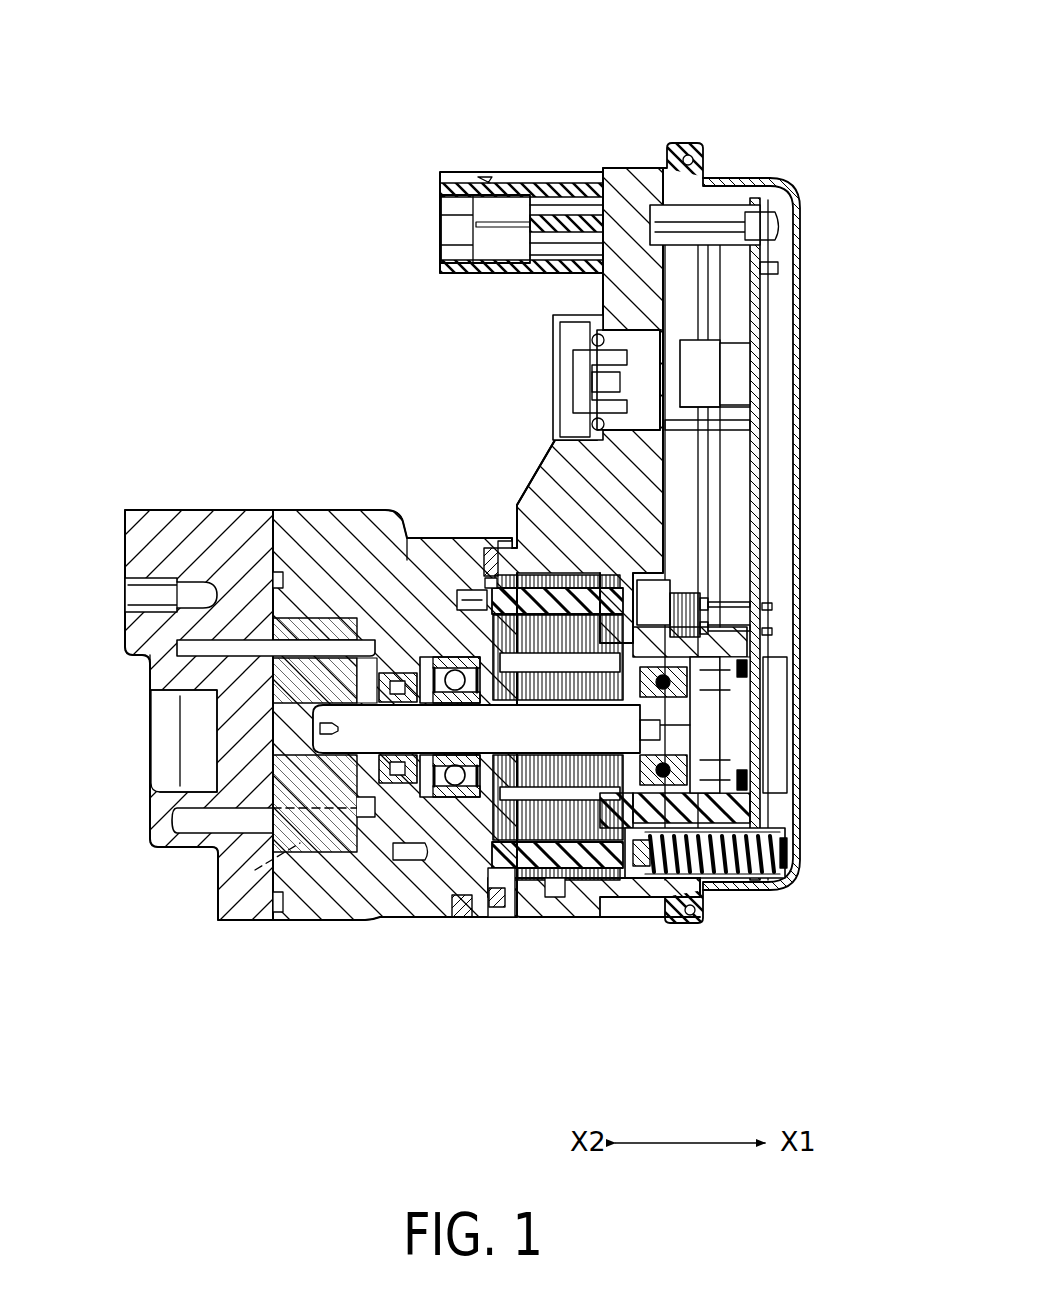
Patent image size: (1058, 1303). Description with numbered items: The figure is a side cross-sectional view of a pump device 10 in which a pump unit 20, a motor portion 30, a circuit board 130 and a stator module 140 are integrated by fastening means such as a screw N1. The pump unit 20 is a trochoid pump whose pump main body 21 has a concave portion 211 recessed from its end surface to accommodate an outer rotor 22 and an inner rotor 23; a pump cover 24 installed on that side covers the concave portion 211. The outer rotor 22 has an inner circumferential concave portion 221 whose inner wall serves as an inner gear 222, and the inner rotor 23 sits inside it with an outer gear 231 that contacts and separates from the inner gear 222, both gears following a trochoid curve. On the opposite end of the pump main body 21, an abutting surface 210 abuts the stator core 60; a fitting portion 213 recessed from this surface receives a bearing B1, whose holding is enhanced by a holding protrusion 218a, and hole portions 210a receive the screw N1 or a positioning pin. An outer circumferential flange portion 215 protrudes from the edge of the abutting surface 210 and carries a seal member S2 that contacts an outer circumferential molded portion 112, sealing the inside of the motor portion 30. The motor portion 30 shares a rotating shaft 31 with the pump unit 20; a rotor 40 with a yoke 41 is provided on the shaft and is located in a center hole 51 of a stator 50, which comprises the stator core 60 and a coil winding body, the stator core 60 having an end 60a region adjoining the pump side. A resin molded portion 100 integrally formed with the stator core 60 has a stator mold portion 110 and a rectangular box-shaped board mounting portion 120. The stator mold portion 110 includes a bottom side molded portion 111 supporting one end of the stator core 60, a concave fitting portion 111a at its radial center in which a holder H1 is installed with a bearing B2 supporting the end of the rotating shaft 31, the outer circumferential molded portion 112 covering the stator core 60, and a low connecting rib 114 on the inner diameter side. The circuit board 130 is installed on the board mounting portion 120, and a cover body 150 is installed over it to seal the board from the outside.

The pump device 10 is at (585, 112).
The pump unit 20 is at (230, 930).
The pump main body 21 is at (355, 520).
The outer rotor 22 is at (300, 618).
The inner rotor 23 is at (275, 657).
The pump cover 24 is at (175, 820).
The motor portion 30 is at (590, 900).
The rotating shaft 31 is at (333, 745).
The rotor 40 is at (613, 905).
The yoke 41 is at (537, 887).
The stator 50 is at (607, 628).
The center hole 51 is at (560, 440).
The stator core 60 is at (543, 618).
The stator end 60a is at (480, 588).
The resin molded portion 100 is at (672, 447).
The stator mold portion 110 is at (666, 900).
The bottom side molded portion 111 is at (705, 617).
The concave fitting portion 111a is at (665, 745).
The outer circumferential molded portion 112 is at (520, 500).
The connecting rib 114 is at (470, 915).
The board mounting portion 120 is at (600, 292).
The circuit board 130 is at (760, 458).
The stator module 140 is at (634, 912).
The cover body 150 is at (800, 392).
The abutting surface 210 is at (522, 893).
The hole portions 210a is at (470, 595).
The concave portion 211 is at (290, 682).
The fitting portion 213 is at (418, 590).
The outer circumferential flange portion 215 is at (500, 546).
The holding protrusion 218a is at (490, 878).
The inner circumferential concave portion 221 is at (238, 585).
The inner gear 222 is at (275, 572).
The outer gear 231 is at (250, 855).
The bearing B1 is at (400, 800).
The bearing B2 is at (695, 663).
The holder H1 is at (712, 813).
The screw N1 is at (558, 890).
The seal member S2 is at (485, 556).